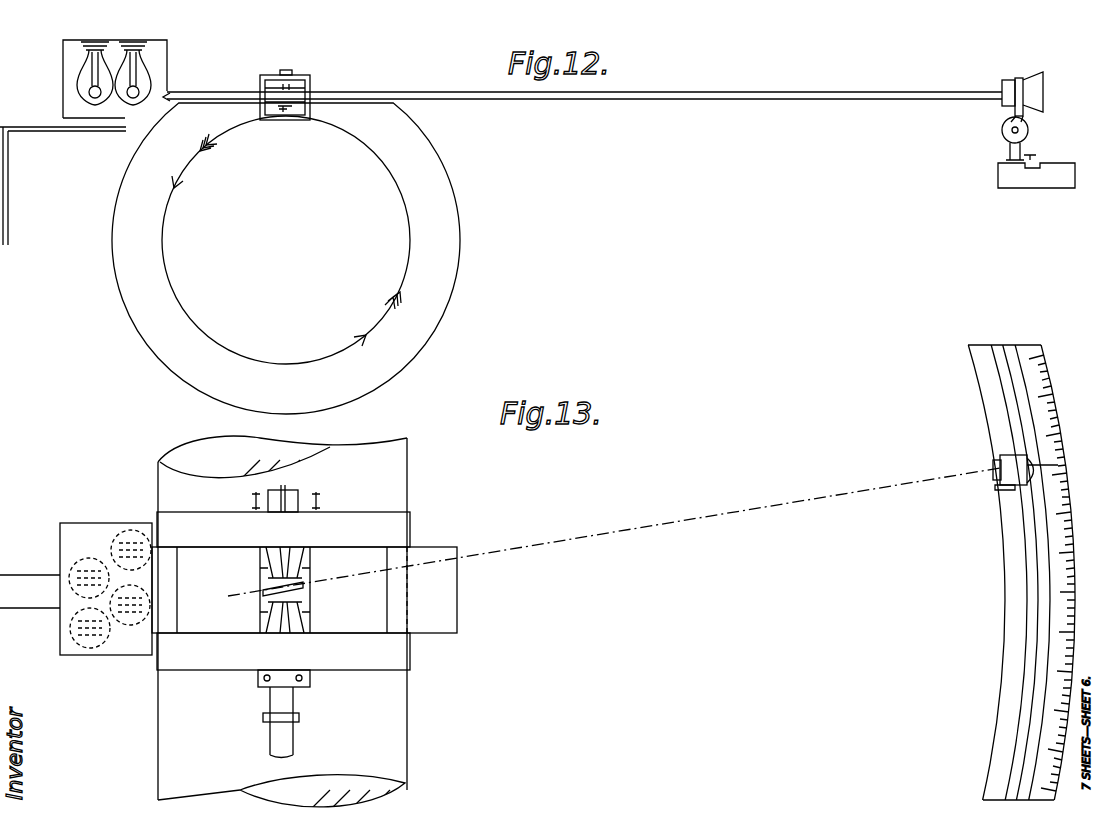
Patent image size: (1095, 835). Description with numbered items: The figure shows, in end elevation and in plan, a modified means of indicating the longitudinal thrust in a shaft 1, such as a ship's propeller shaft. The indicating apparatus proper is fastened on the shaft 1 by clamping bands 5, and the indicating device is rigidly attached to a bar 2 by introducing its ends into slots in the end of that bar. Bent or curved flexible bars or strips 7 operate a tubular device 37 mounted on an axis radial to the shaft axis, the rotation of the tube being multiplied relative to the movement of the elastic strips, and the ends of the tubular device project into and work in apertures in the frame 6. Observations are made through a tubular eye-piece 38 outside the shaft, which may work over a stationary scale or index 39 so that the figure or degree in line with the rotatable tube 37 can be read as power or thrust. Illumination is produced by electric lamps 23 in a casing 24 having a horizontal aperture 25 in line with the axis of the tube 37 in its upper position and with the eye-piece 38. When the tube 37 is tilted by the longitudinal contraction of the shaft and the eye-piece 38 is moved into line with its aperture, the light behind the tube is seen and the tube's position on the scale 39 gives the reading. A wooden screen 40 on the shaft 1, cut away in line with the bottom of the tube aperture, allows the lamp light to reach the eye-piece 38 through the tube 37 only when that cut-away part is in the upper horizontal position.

In FIG. 12, the shaft 1 is at (185, 262).
In FIG. 13, the shaft 1 is at (165, 482).
In FIG. 13, the bar 2 is at (285, 742).
In FIG. 13, the clamping bands 5 is at (388, 528).
In FIG. 13, the frame 6 is at (305, 555).
In FIG. 13, the flexible bars or strips 7 is at (272, 555).
In FIG. 12, the electric lamps 23 is at (95, 104).
In FIG. 13, the electric lamps 23 is at (128, 540).
In FIG. 12, the casing 24 is at (160, 55).
In FIG. 13, the casing 24 is at (70, 549).
In FIG. 12, the horizontal aperture 25 is at (163, 97).
In FIG. 12, the tubular device 37 is at (295, 90).
In FIG. 13, the tubular device 37 is at (298, 586).
In FIG. 12, the tubular eye-piece 38 is at (1028, 90).
In FIG. 13, the tubular eye-piece 38 is at (1010, 460).
In FIG. 12, the stationary scale or index 39 is at (1055, 163).
In FIG. 13, the stationary scale or index 39 is at (1040, 389).
In FIG. 12, the wooden screen 40 is at (442, 232).
In FIG. 13, the wooden screen 40 is at (440, 588).